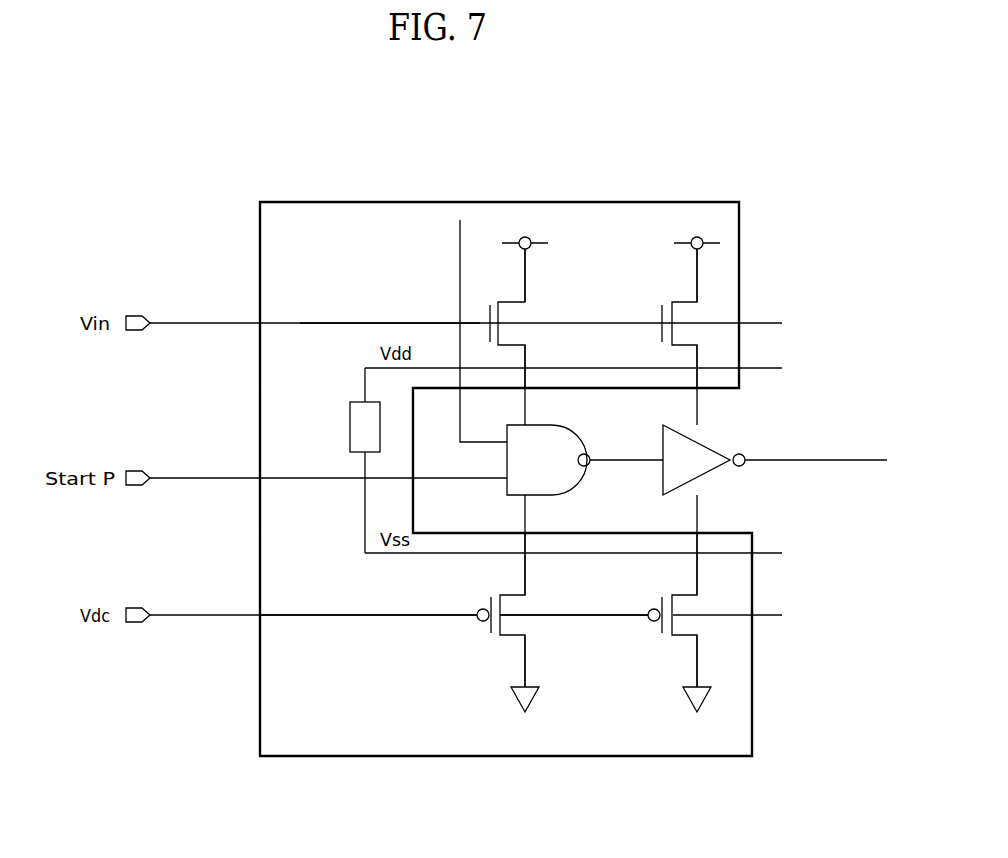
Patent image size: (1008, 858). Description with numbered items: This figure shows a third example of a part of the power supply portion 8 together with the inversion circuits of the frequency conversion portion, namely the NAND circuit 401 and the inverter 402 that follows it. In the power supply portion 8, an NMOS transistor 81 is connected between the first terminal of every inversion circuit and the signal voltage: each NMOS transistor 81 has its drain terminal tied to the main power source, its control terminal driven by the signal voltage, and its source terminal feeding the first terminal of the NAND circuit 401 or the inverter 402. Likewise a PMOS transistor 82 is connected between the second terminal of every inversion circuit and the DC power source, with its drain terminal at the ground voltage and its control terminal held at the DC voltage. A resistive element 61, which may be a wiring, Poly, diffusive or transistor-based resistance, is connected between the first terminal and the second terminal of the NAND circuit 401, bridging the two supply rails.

The power supply portion 8 is at (300, 201).
The NMOS transistor 81 is at (561, 252).
The PMOS transistor 82 is at (503, 670).
The resistive element 61 is at (348, 402).
The NAND circuit 401 is at (570, 483).
The inverter 402 is at (712, 470).